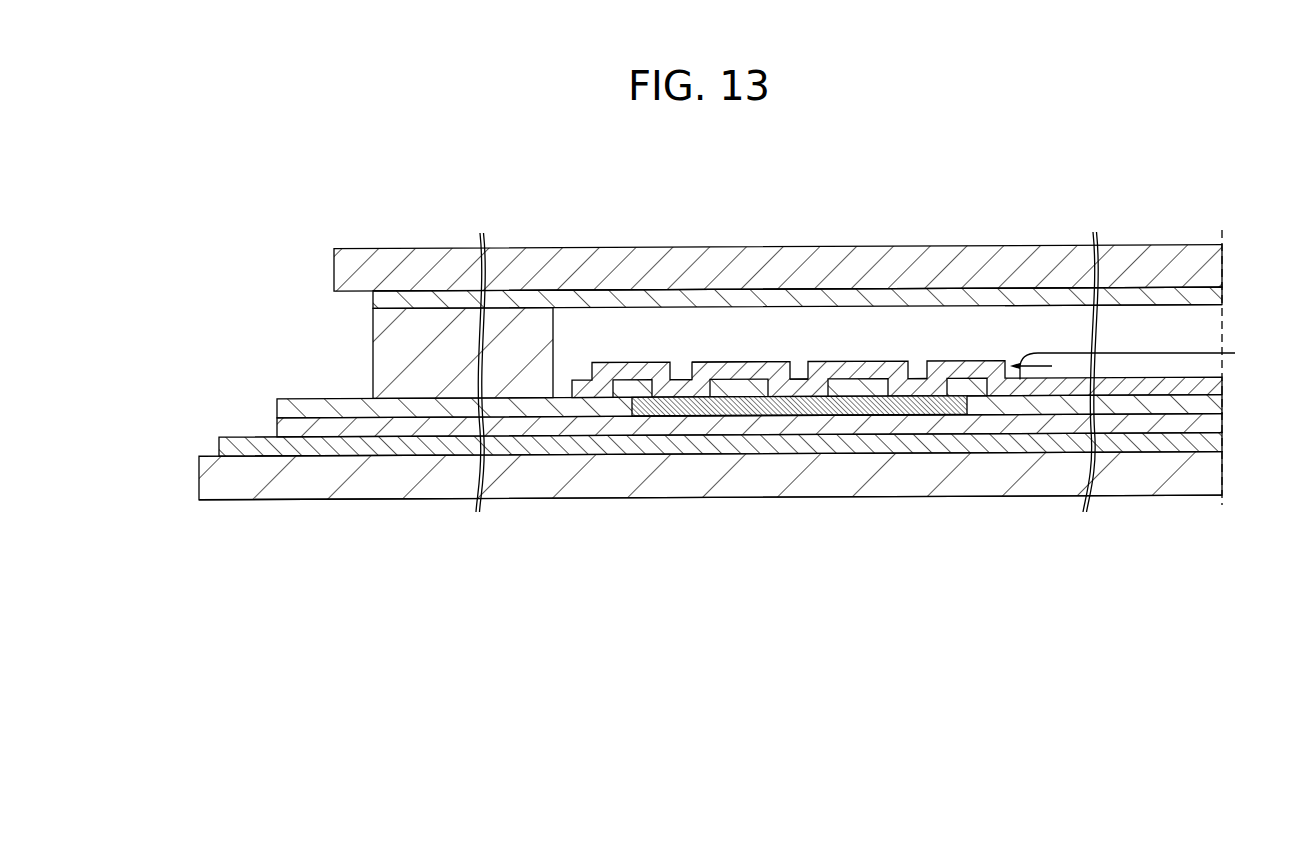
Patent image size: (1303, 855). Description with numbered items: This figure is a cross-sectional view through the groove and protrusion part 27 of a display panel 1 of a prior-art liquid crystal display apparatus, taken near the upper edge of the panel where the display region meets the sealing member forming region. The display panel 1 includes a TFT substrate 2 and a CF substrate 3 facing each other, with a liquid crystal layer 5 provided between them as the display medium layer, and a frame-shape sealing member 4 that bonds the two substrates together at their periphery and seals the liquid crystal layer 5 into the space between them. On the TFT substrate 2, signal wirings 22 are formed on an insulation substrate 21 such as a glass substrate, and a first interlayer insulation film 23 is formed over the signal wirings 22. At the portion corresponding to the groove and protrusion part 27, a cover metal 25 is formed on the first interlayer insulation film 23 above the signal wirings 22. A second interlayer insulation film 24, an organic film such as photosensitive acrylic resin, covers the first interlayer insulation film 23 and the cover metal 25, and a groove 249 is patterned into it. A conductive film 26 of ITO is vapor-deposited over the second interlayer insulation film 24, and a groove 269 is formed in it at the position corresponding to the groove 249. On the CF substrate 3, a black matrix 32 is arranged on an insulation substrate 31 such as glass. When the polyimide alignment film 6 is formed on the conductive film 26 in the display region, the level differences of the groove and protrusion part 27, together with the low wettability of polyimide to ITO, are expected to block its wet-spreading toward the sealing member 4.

The display panel 1 is at (340, 208).
The TFT substrate 2 is at (338, 491).
The insulation substrate 21 is at (628, 493).
The signal wirings 22 is at (219, 447).
The first interlayer insulation film 23 is at (277, 430).
The second interlayer insulation film 24 is at (277, 410).
The groove 249 is at (683, 397).
The cover metal 25 is at (787, 415).
The conductive film 26 is at (652, 362).
The groove 269 is at (673, 380).
The groove and protrusion part 27 is at (730, 349).
The CF substrate 3 is at (546, 259).
The insulation substrate 31 is at (622, 256).
The black matrix 32 is at (1000, 285).
The sealing member 4 is at (383, 356).
The liquid crystal layer 5 is at (1135, 325).
The alignment film 6 is at (1192, 365).